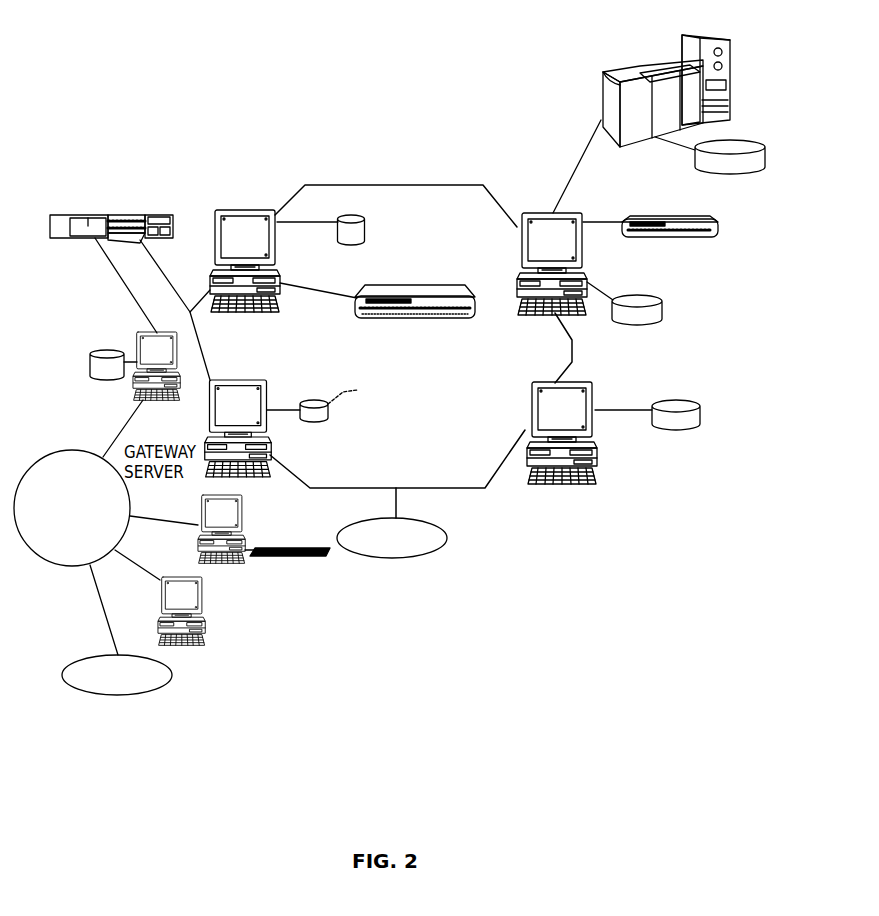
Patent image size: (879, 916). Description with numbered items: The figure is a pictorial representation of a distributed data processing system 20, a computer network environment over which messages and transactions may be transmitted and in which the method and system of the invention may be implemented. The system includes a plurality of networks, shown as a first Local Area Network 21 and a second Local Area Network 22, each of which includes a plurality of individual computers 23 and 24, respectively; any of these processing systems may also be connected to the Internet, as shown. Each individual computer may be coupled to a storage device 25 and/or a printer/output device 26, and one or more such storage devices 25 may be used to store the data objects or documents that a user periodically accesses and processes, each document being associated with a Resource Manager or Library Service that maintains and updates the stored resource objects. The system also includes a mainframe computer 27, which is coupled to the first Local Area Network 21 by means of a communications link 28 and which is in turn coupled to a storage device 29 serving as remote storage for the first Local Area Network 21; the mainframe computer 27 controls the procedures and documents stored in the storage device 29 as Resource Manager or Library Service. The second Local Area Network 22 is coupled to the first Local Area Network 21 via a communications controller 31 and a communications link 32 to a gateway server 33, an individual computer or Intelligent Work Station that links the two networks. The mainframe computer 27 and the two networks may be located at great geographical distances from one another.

The distributed data processing system 20 is at (398, 165).
The Local Area Network 21 is at (421, 371).
The Local Area Network 22 is at (70, 452).
The individual computer 23 is at (240, 212).
The individual computer 24 is at (238, 505).
The storage device 25 is at (72, 360).
The printer/output device 26 is at (417, 287).
The mainframe computer 27 is at (638, 72).
The communications link 28 is at (575, 150).
The storage device 29 is at (716, 148).
The communications controller 31 is at (167, 215).
The communications link 32 is at (120, 278).
The gateway server 33 is at (134, 332).